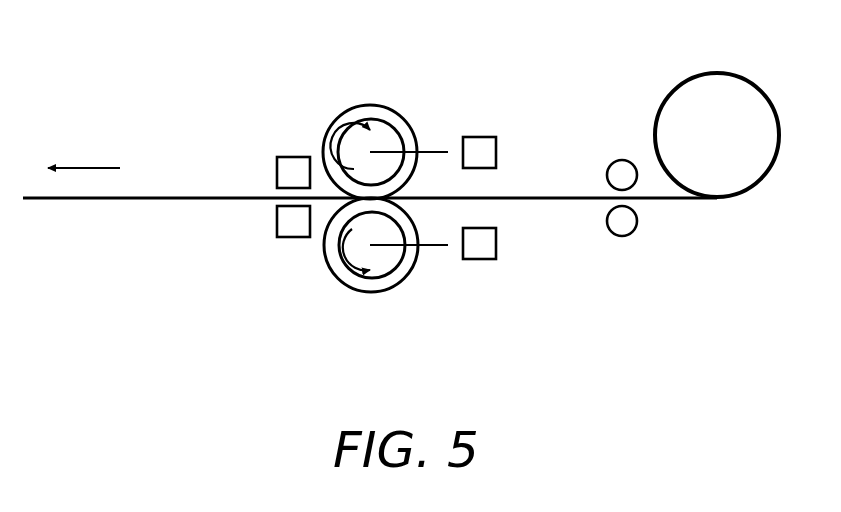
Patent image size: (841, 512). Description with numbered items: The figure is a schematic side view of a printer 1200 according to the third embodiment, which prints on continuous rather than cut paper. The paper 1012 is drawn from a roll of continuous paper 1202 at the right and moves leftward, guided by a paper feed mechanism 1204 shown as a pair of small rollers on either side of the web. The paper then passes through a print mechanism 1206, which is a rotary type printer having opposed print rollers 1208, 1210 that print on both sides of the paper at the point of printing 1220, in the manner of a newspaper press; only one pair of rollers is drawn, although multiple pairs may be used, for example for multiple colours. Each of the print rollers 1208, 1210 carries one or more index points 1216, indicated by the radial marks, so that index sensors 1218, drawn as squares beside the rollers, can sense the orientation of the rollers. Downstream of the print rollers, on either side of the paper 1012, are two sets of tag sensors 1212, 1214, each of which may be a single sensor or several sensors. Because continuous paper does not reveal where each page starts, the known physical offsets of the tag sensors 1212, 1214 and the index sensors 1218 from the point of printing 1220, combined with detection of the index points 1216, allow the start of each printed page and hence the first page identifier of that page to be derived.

The paper 1012 is at (90, 201).
The printer 1200 is at (609, 298).
The roll of continuous paper 1202 is at (713, 200).
The paper feed mechanism 1204 is at (622, 148).
The print mechanism 1206 is at (318, 110).
The print roller 1208 is at (373, 105).
The print roller 1210 is at (375, 293).
The tag sensors 1212 is at (277, 221).
The tag sensors 1214 is at (277, 172).
The index point 1216 is at (444, 150).
The index sensors 1218 is at (495, 137).
The point of printing 1220 is at (370, 203).